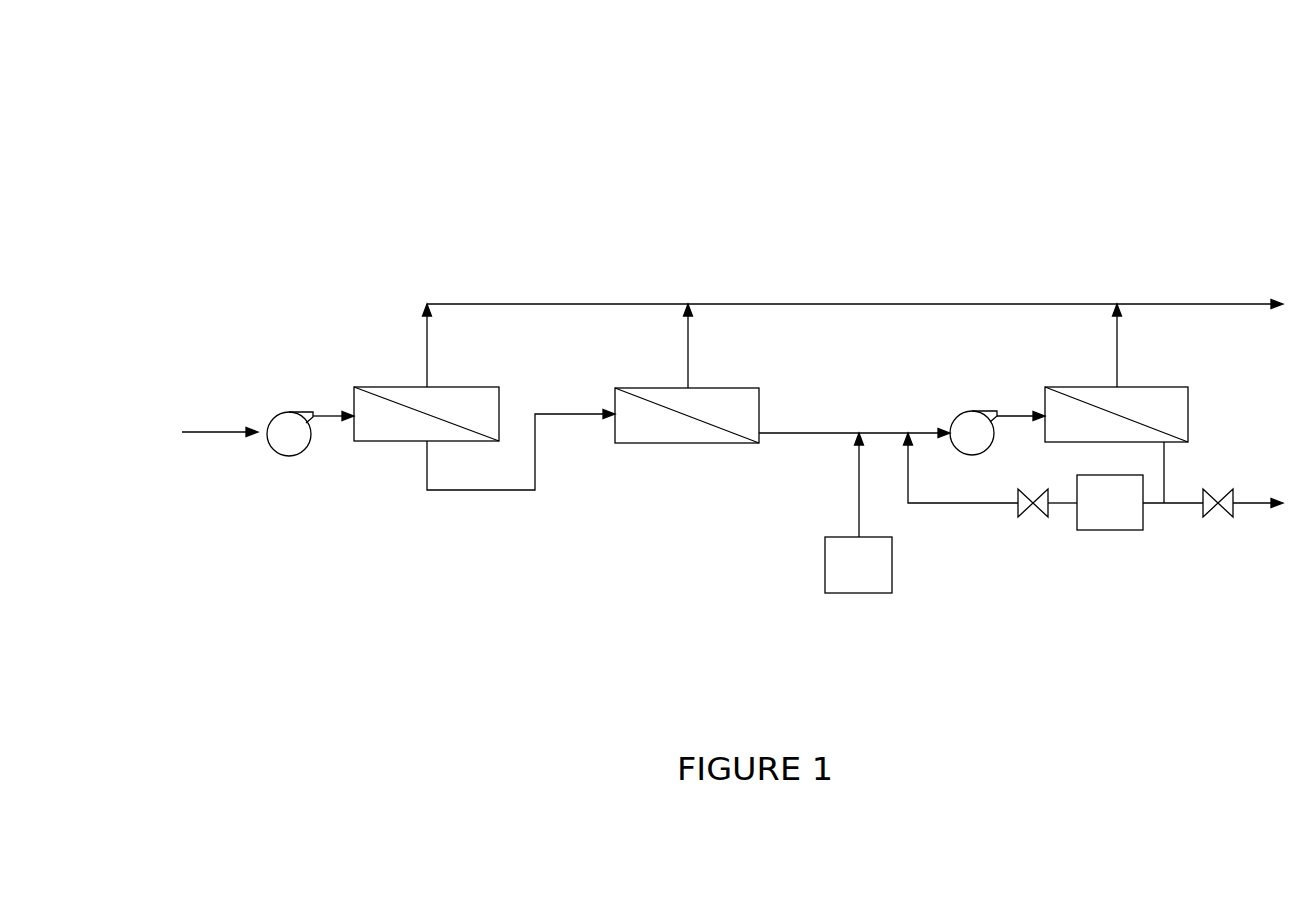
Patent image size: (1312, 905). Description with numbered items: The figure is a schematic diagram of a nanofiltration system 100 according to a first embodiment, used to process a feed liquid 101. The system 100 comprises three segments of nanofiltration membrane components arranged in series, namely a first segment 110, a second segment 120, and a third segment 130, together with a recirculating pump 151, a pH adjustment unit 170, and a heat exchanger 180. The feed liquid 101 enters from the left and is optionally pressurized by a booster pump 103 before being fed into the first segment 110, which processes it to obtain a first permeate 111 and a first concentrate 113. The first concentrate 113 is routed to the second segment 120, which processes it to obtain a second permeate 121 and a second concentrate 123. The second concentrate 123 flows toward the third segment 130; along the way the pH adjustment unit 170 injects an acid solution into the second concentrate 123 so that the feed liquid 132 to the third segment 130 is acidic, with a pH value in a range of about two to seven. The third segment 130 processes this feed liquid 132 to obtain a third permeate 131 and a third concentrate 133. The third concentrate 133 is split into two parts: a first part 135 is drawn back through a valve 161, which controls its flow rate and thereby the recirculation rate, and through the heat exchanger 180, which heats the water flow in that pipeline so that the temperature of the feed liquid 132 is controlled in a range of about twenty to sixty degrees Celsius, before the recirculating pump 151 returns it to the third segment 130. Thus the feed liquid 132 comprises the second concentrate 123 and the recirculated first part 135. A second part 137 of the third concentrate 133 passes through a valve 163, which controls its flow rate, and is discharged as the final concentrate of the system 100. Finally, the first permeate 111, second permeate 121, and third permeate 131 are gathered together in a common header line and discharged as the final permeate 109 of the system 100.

The nanofiltration system 100 is at (1016, 163).
The feed liquid 101 is at (212, 432).
The booster pump 103 is at (285, 457).
The final permeate 109 is at (1196, 304).
The first segment 110 is at (372, 387).
The first permeate 111 is at (428, 357).
The first concentrate 113 is at (462, 490).
The second segment 120 is at (631, 388).
The second permeate 121 is at (689, 357).
The second concentrate 123 is at (803, 433).
The third segment 130 is at (1061, 387).
The third permeate 131 is at (1118, 357).
The feed liquid to the third segment 132 is at (1012, 412).
The third concentrate 133 is at (1165, 458).
The first part of the third concentrate 135 is at (950, 503).
The second part of the third concentrate 137 is at (1178, 503).
The recirculating pump 151 is at (960, 412).
The valve 161 is at (1030, 517).
The valve 163 is at (1220, 517).
The pH adjustment unit 170 is at (825, 563).
The heat exchanger 180 is at (1108, 530).